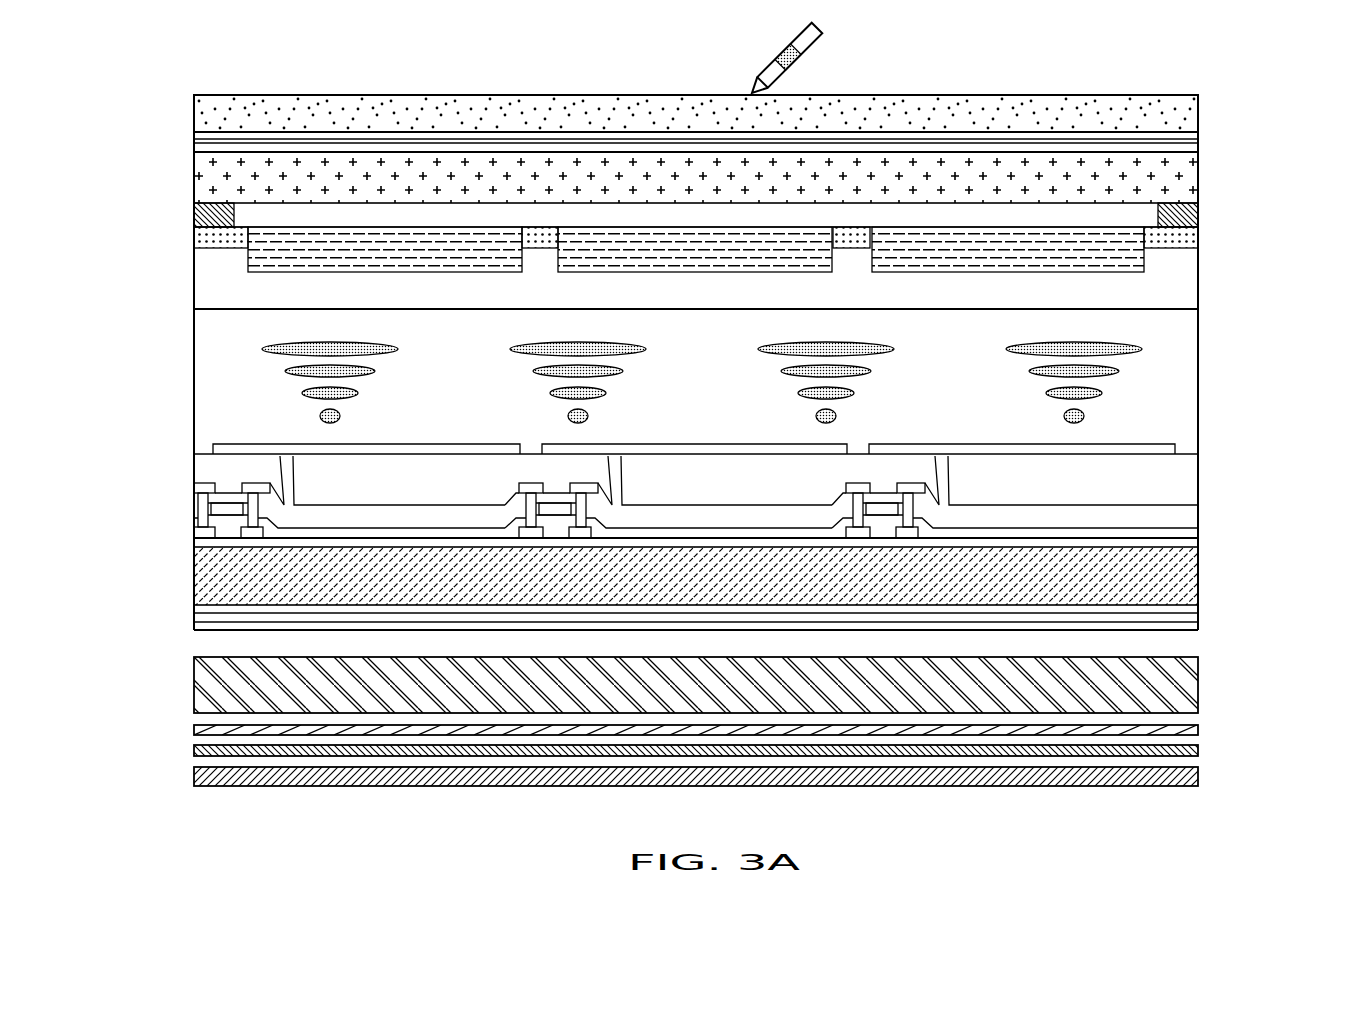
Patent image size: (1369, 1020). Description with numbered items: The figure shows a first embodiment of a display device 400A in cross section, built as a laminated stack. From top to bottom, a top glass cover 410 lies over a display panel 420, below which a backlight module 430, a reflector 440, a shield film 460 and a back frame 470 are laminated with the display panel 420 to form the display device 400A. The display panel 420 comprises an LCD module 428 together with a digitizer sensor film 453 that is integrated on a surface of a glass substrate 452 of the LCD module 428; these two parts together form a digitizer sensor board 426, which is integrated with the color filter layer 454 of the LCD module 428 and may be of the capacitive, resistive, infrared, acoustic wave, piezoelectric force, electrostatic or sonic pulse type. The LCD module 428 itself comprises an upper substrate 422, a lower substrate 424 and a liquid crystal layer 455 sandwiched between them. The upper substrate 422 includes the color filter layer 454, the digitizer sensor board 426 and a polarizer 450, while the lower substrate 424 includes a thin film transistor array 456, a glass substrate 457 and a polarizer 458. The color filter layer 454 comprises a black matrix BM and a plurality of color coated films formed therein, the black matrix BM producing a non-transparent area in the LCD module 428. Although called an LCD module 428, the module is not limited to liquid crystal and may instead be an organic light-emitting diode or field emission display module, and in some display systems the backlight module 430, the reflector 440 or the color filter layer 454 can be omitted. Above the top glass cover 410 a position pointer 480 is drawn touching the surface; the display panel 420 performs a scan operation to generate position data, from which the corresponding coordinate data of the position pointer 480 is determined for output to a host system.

The display device 400A is at (352, 827).
The top glass cover 410 is at (1200, 113).
The polarizer 450 is at (1200, 142).
The display panel 420 is at (87, 145).
The upper substrate 422 is at (160, 150).
The lower substrate 424 is at (158, 455).
The digitizer sensor board 426 is at (1303, 158).
The LCD module 428 is at (1303, 232).
The glass substrate 452 is at (1200, 181).
The digitizer sensor film 453 is at (1200, 216).
The black matrix BM is at (1200, 238).
The color filter layer 454 is at (1200, 275).
The liquid crystal layer 455 is at (194, 380).
The thin film transistor array 456 is at (1200, 511).
The glass substrate 457 is at (1200, 581).
The polarizer 458 is at (1200, 615).
The backlight module 430 is at (1200, 678).
The reflector 440 is at (1200, 727).
The shield film 460 is at (1200, 749).
The back frame 470 is at (1200, 775).
The position pointer 480 is at (798, 62).